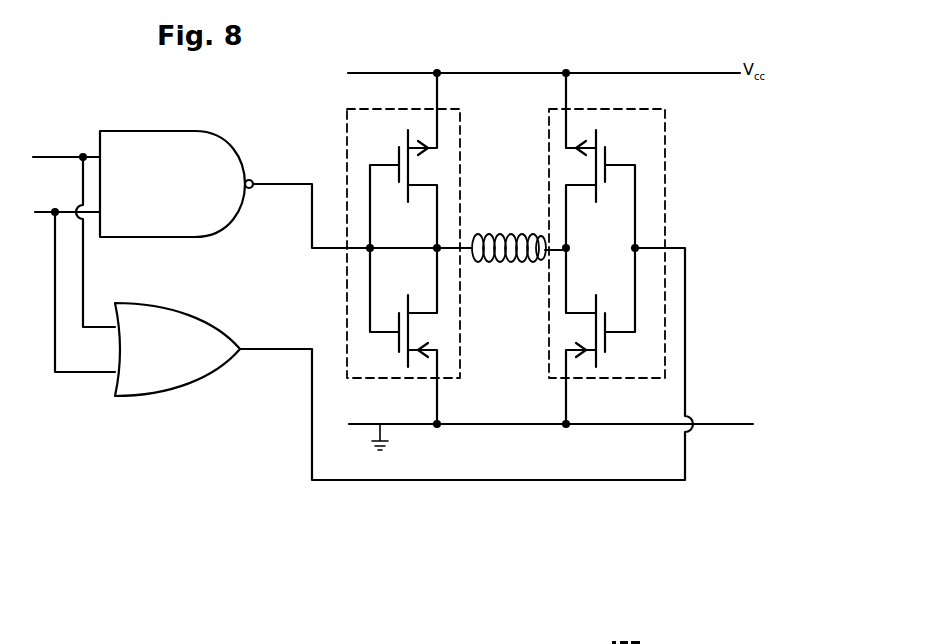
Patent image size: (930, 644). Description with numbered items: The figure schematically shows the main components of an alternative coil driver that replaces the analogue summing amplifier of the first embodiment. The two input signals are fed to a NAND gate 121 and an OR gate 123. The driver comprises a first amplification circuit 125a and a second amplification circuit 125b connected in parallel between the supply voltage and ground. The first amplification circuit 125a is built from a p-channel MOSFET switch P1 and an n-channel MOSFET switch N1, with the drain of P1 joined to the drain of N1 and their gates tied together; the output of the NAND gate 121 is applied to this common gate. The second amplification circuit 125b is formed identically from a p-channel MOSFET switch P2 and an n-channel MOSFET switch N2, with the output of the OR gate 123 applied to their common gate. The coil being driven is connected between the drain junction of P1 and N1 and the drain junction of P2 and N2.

The NAND gate 121 is at (171, 128).
The OR gate 123 is at (168, 302).
The first amplification circuit 125a is at (437, 248).
The second amplification circuit 125b is at (642, 248).
The p-channel MOSFET switch P1 is at (391, 161).
The n-channel MOSFET switch N1 is at (390, 338).
The p-channel MOSFET switch P2 is at (617, 161).
The n-channel MOSFET switch N2 is at (618, 338).